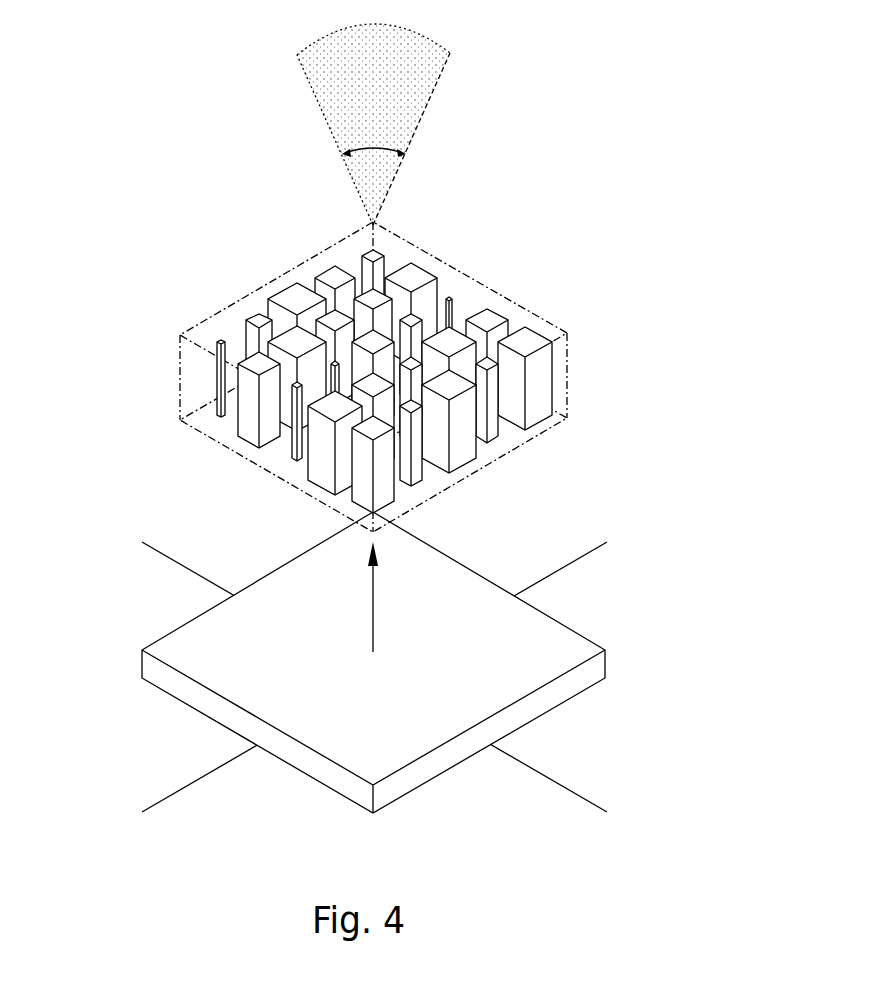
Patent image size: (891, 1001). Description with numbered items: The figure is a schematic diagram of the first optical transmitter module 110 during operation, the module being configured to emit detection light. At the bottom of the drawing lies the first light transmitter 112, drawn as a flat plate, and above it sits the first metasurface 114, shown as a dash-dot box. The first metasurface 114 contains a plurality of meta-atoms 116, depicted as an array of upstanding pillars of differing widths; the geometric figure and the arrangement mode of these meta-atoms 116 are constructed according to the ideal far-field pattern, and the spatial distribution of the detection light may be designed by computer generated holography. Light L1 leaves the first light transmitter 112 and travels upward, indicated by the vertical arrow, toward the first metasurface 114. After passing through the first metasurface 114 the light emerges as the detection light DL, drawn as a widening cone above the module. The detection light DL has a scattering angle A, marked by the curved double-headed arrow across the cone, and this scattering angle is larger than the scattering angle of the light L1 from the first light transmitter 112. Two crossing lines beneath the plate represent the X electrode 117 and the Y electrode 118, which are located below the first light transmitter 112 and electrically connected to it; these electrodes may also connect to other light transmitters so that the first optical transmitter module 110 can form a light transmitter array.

The first optical transmitter module 110 is at (452, 418).
The first light transmitter 112 is at (148, 667).
The first metasurface 114 is at (362, 377).
The meta-atoms 116 is at (246, 433).
The X electrode 117 is at (587, 555).
The Y electrode 118 is at (590, 800).
The detection light DL is at (320, 99).
The scattering angle A is at (366, 148).
The light L1 is at (373, 627).